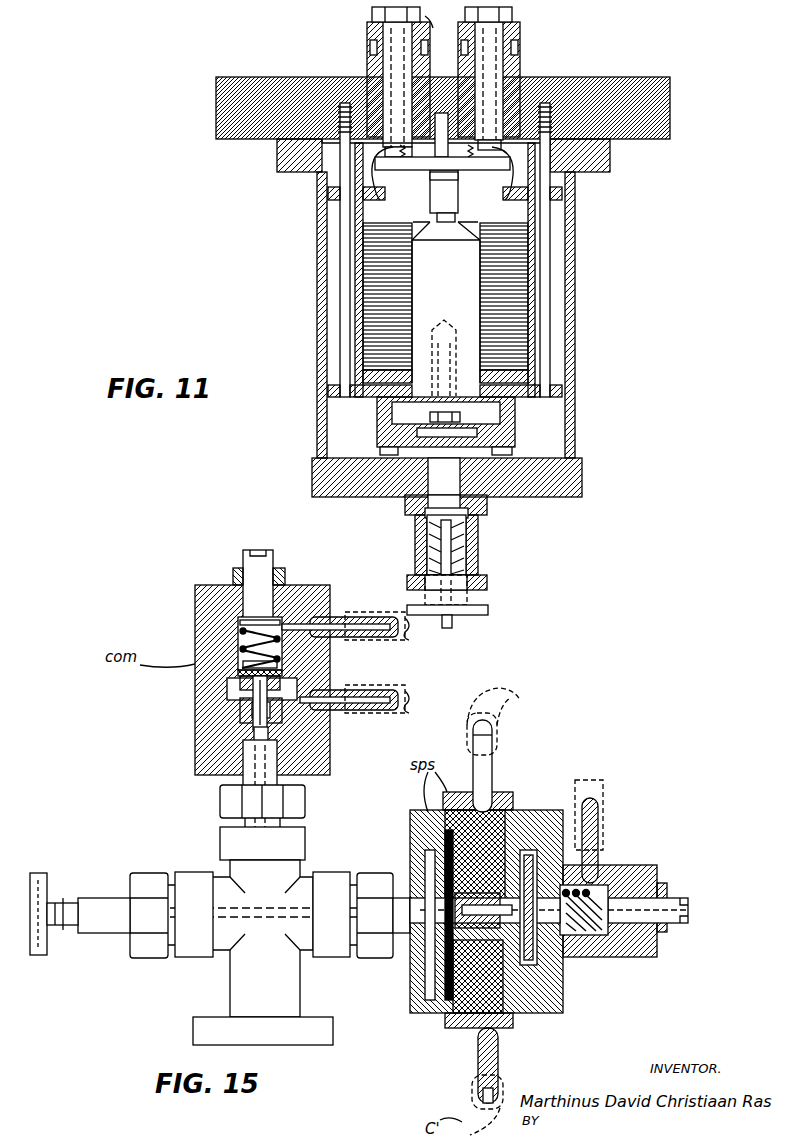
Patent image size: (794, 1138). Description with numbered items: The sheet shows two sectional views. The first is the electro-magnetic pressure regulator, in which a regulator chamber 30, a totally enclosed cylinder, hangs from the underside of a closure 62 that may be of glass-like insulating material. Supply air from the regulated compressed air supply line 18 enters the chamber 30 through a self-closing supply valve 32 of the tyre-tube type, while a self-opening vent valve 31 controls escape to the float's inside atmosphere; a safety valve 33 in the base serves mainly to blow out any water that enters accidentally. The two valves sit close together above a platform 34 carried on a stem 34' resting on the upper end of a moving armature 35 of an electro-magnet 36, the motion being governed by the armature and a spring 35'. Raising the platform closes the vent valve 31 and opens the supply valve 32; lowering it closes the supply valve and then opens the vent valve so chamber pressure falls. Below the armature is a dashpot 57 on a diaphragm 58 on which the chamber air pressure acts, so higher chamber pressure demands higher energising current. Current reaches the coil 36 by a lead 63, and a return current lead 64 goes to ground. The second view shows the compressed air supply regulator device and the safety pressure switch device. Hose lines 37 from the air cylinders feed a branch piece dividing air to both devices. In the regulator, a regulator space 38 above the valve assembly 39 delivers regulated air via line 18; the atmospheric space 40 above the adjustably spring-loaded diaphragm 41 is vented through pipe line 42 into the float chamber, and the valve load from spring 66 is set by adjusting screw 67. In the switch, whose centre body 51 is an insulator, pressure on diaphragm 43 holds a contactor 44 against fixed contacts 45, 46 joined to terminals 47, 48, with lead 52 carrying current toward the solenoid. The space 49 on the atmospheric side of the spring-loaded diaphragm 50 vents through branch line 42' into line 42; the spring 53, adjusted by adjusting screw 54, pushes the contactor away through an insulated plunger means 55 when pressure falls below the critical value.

In FIG. 11, the regulated compressed air supply line 18 is at (439, 30).
In FIG. 15, the regulated compressed air supply line 18 is at (412, 697).
In FIG. 11, the regulator chamber 30 is at (572, 350).
In FIG. 11, the vent valve 31 is at (492, 70).
In FIG. 11, the supply valve 32 is at (396, 58).
In FIG. 11, the safety valve 33 is at (418, 540).
In FIG. 11, the platform 34 is at (510, 161).
In FIG. 11, the stem 34' is at (525, 213).
In FIG. 11, the armature 35 is at (375, 254).
In FIG. 11, the spring 35' is at (438, 198).
In FIG. 11, the electro-magnet 36 is at (382, 318).
In FIG. 15, the hose lines 37 is at (42, 892).
In FIG. 15, the regulator space 38 is at (235, 690).
In FIG. 15, the valve assembly 39 is at (242, 712).
In FIG. 15, the atmospheric space 40 is at (300, 648).
In FIG. 15, the diaphragm 41 is at (312, 696).
In FIG. 15, the pipe line 42 is at (345, 611).
In FIG. 15, the branch line 42' is at (610, 831).
In FIG. 15, the diaphragm 43 is at (428, 945).
In FIG. 15, the contactor 44 is at (420, 960).
In FIG. 15, the fixed contact 45 is at (430, 990).
In FIG. 15, the fixed contact 46 is at (515, 808).
In FIG. 15, the terminal 47 is at (477, 1060).
In FIG. 15, the terminal 48 is at (483, 778).
In FIG. 15, the space 49 is at (594, 936).
In FIG. 15, the diaphragm 50 is at (516, 1020).
In FIG. 15, the centre body 51 is at (508, 1028).
In FIG. 15, the lead 52 is at (507, 717).
In FIG. 15, the spring 53 is at (598, 882).
In FIG. 15, the adjusting screw 54 is at (676, 922).
In FIG. 15, the insulated plunger means 55 is at (540, 960).
In FIG. 11, the dashpot 57 is at (420, 403).
In FIG. 11, the diaphragm 58 is at (506, 445).
In FIG. 11, the closure 62 is at (672, 100).
In FIG. 11, the lead 63 is at (357, 172).
In FIG. 11, the return current lead 64 is at (520, 183).
In FIG. 15, the spring 66 is at (200, 622).
In FIG. 15, the adjusting screw 67 is at (255, 565).